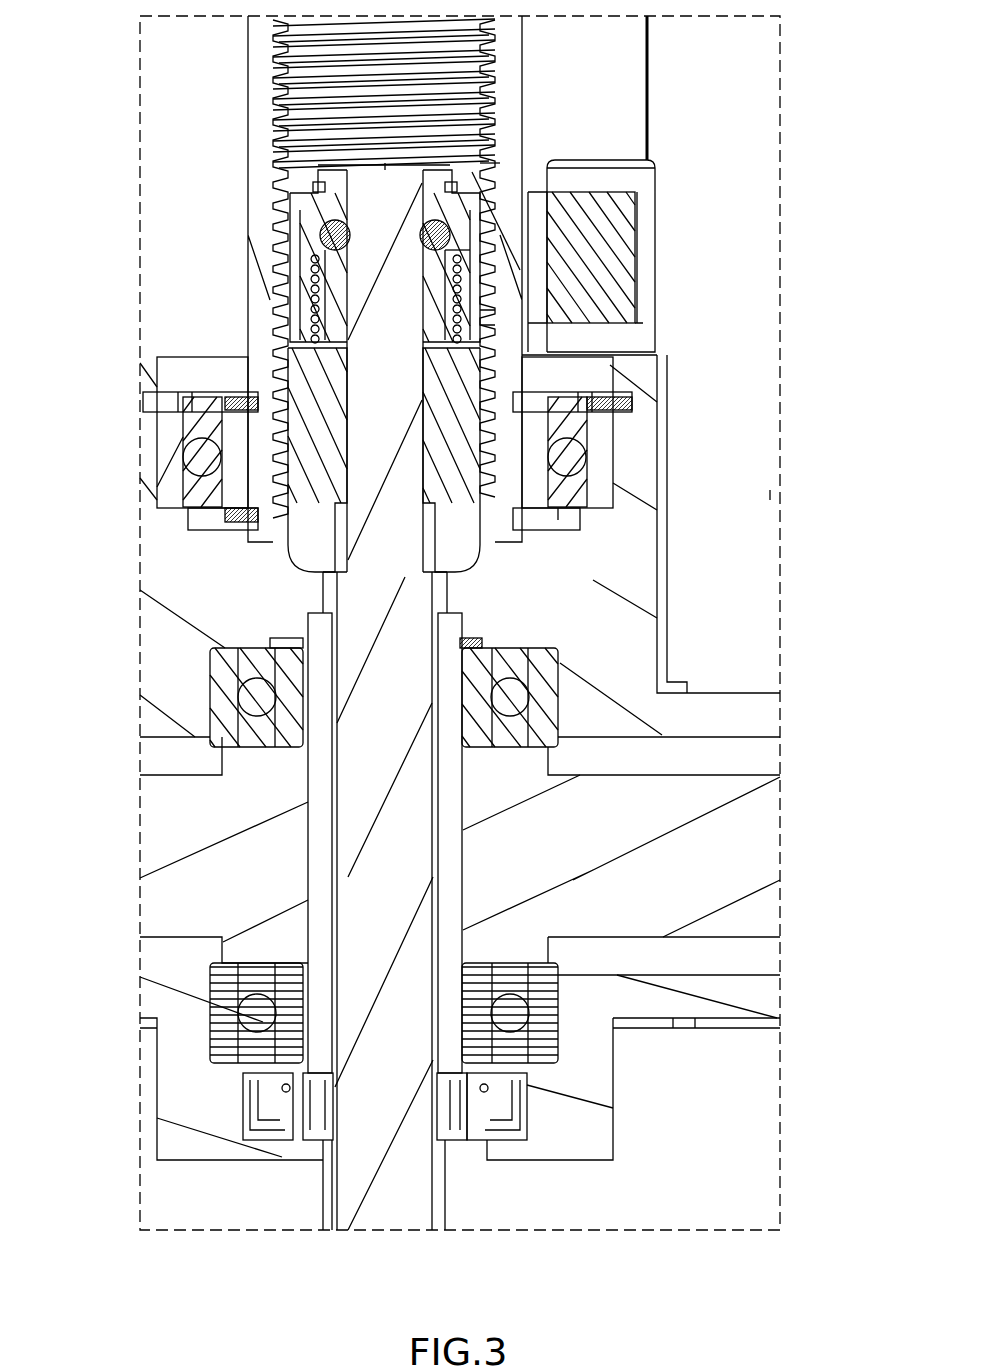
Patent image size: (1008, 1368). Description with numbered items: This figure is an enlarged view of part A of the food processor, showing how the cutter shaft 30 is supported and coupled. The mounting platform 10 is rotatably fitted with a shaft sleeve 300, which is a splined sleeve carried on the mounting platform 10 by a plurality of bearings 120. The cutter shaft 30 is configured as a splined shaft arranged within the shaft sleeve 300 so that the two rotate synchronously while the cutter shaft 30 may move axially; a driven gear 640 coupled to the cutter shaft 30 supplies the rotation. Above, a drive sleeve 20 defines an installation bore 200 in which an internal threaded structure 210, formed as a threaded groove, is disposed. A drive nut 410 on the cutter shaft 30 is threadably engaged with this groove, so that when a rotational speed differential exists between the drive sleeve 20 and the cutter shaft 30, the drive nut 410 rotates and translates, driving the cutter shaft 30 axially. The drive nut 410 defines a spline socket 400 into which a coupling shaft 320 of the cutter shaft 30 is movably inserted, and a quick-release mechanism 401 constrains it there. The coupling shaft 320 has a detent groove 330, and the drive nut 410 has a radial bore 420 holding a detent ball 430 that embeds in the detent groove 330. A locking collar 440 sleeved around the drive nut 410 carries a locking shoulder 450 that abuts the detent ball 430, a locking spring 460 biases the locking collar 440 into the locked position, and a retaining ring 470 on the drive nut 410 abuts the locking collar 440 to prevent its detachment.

The drive sleeve 20 is at (268, 268).
The installation bore 200 is at (285, 133).
The internal threaded structure 210 is at (282, 172).
The detent groove 330 is at (313, 218).
The quick-release mechanism 401 is at (307, 263).
The spline socket 400 is at (347, 412).
The drive nut 410 is at (312, 435).
The coupling shaft 320 is at (380, 497).
The cutter shaft 30 is at (365, 530).
The bearings 120 is at (257, 700).
The shaft sleeve 300 is at (325, 847).
The retaining ring 470 is at (490, 165).
The radial bore 420 is at (505, 208).
The detent ball 430 is at (452, 233).
The locking shoulder 450 is at (453, 243).
The locking collar 440 is at (463, 270).
The locking spring 460 is at (490, 318).
The mounting platform 10 is at (750, 718).
The driven gear 640 is at (747, 850).
The part A is at (778, 498).